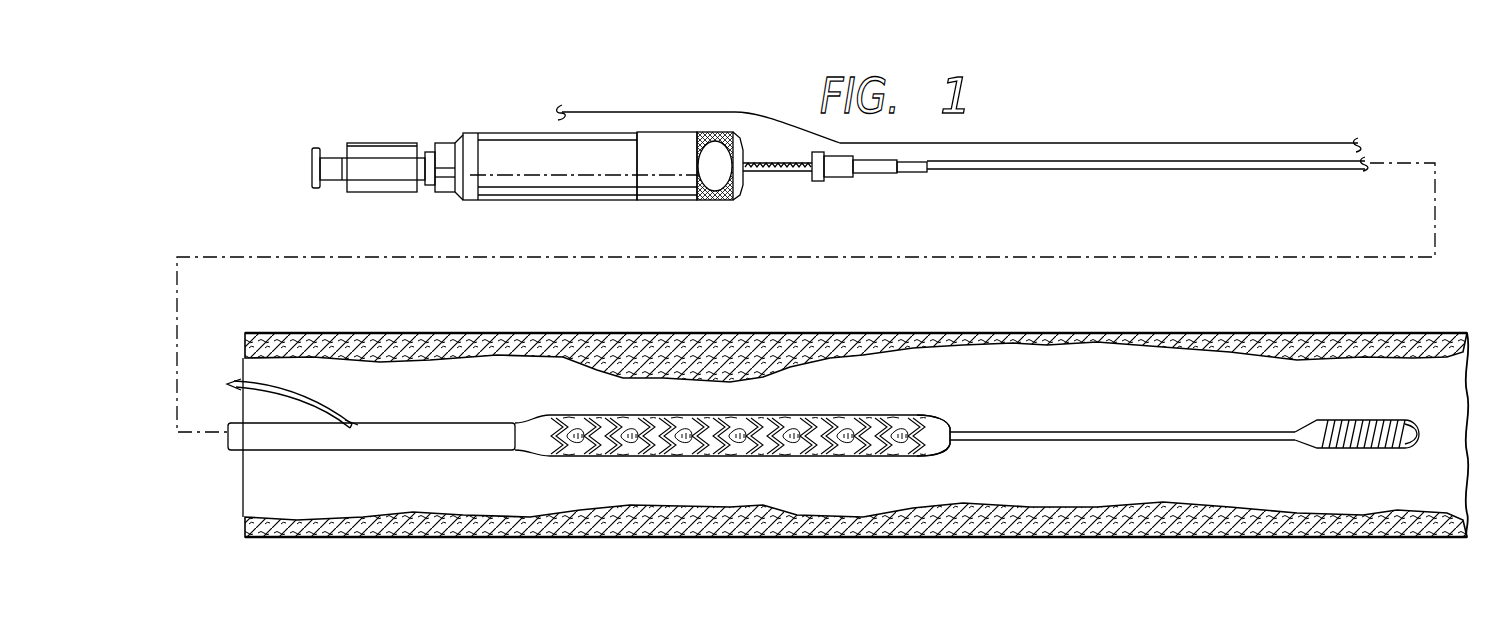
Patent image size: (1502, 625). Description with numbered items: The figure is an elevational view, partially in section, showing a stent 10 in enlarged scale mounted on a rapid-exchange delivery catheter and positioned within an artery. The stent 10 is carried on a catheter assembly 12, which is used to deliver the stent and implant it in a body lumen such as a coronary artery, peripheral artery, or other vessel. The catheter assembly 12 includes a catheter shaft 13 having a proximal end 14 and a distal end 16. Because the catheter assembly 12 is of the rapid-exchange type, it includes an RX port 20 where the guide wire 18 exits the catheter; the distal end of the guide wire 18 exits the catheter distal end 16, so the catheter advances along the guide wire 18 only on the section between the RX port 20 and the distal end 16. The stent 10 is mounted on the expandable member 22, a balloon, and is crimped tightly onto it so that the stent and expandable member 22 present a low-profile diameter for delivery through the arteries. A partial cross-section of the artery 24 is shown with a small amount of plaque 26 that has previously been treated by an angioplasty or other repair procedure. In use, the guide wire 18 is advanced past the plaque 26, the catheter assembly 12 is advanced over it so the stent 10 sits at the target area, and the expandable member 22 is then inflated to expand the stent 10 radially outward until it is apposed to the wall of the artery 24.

The stent 10 is at (548, 417).
The catheter assembly 12 is at (1062, 180).
The catheter shaft 13 is at (995, 170).
The proximal end 14 is at (362, 143).
The distal end 16 is at (947, 420).
The guide wire 18 is at (248, 378).
The RX port 20 is at (352, 423).
The expandable member 22 is at (932, 456).
The artery 24 is at (790, 333).
The plaque 26 is at (780, 505).